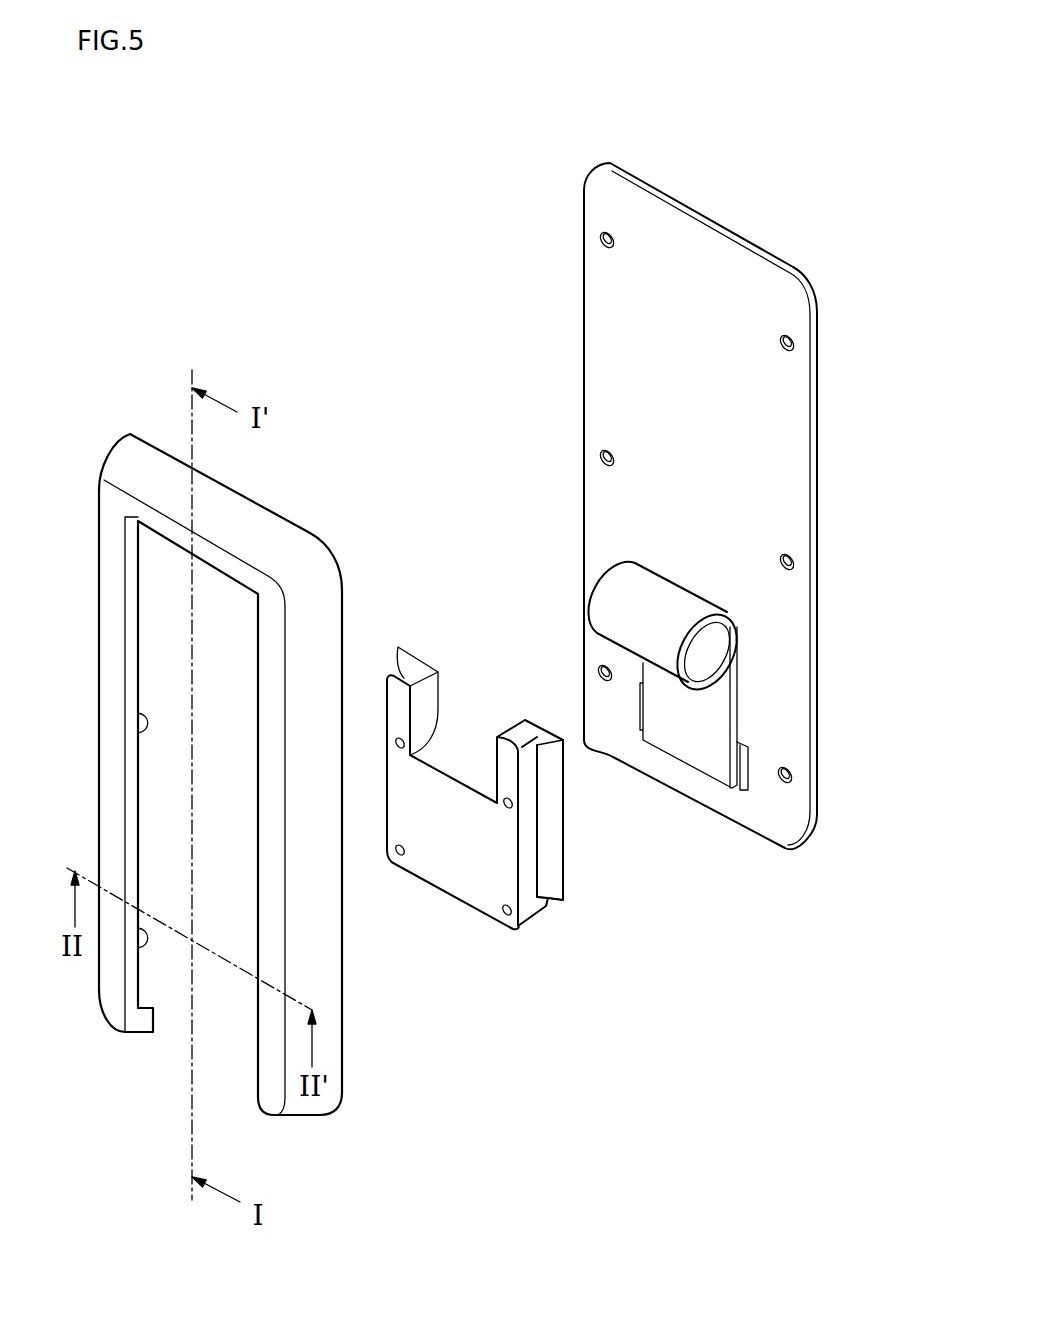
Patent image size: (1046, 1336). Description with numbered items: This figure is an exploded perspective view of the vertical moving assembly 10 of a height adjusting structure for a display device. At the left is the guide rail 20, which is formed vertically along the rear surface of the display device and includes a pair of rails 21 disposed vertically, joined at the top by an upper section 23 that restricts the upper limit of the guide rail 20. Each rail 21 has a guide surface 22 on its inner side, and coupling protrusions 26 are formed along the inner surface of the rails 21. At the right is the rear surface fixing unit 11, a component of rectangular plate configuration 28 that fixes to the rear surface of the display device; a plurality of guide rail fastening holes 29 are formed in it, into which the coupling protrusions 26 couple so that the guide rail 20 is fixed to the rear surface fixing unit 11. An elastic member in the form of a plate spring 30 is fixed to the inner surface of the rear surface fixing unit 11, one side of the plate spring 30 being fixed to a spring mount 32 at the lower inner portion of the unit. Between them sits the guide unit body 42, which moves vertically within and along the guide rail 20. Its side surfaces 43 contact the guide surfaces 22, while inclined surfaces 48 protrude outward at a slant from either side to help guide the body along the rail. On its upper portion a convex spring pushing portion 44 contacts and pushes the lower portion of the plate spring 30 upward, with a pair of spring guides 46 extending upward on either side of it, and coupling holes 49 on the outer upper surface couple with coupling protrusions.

The door handle assembly 10 is at (180, 218).
The rear surface fixing unit 11 is at (693, 543).
The guide rail 20 is at (176, 754).
The rails 21 is at (117, 722).
The guide surface 22 is at (138, 803).
The upper section 23 is at (258, 517).
The coupling protrusions 26 is at (148, 945).
The mounting plate 28 is at (610, 353).
The guide rail fastening holes 29 is at (598, 243).
The plate spring 30 is at (680, 742).
The spring mount 32 is at (743, 768).
The guide unit body 42 is at (509, 820).
The side surfaces 43 is at (530, 908).
The spring pushing portion 44 is at (462, 758).
The spring guide 46 is at (517, 735).
The inclined surface 48 is at (560, 843).
The coupling holes 49 is at (495, 917).